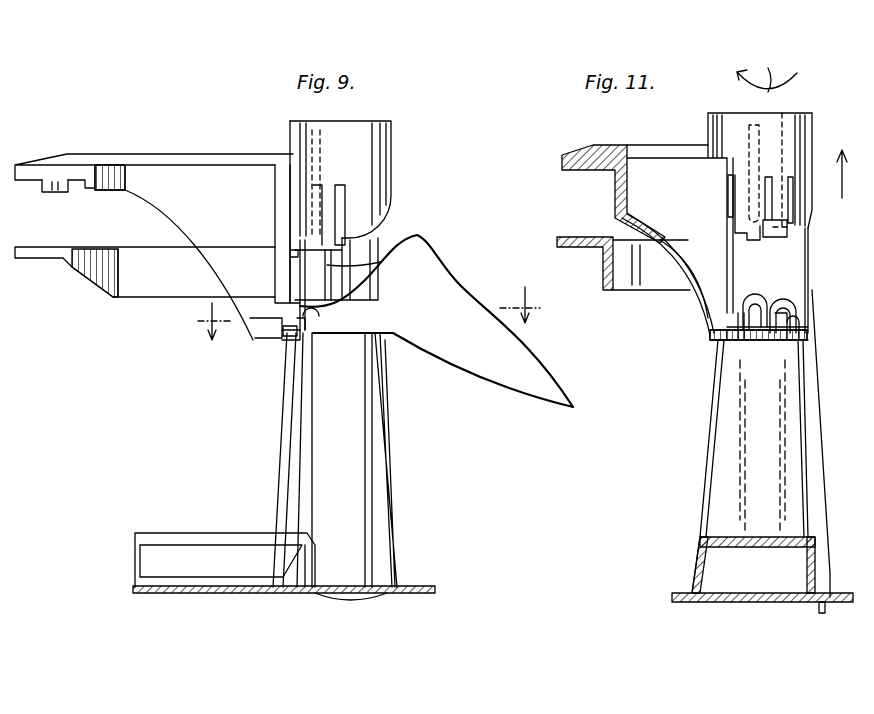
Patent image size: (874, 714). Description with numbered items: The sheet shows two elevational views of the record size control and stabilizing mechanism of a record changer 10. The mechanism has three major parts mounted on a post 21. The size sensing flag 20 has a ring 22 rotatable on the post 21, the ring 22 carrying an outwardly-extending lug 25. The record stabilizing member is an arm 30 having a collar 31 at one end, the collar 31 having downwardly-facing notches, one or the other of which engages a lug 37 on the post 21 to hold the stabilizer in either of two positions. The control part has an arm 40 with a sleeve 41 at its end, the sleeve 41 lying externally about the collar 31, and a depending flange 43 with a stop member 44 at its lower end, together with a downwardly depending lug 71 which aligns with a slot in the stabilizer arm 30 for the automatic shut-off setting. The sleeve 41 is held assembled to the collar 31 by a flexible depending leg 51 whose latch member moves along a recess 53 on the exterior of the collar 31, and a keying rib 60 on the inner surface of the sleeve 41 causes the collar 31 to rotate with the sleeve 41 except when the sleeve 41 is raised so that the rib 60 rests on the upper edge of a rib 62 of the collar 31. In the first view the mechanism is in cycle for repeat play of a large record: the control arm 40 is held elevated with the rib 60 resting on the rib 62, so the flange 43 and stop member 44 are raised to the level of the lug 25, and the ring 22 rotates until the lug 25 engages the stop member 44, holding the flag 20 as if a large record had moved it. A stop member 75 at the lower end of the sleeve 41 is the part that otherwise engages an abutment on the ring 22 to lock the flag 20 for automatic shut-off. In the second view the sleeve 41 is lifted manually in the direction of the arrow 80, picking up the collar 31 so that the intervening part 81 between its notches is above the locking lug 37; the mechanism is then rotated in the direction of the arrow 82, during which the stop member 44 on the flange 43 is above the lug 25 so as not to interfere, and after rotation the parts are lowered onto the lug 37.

In FIG. 9, the record changer 10 is at (195, 592).
In FIG. 11, the record changer 10 is at (730, 602).
In FIG. 9, the size sensing flag 20 is at (447, 348).
In FIG. 11, the size sensing flag 20 is at (718, 460).
In FIG. 9, the post 21 is at (398, 515).
In FIG. 11, the ring 22 is at (750, 338).
In FIG. 9, the lug 25 is at (278, 320).
In FIG. 11, the lug 25 is at (722, 345).
In FIG. 9, the arm 30 is at (132, 288).
In FIG. 11, the arm 30 is at (587, 240).
In FIG. 9, the collar 31 is at (365, 240).
In FIG. 11, the collar 31 is at (800, 242).
In FIG. 9, the lug 37 is at (311, 314).
In FIG. 11, the lug 37 is at (807, 333).
In FIG. 9, the arm 40 is at (195, 148).
In FIG. 11, the arm 40 is at (650, 147).
In FIG. 9, the sleeve 41 is at (383, 137).
In FIG. 11, the sleeve 41 is at (798, 120).
In FIG. 9, the flange 43 is at (250, 318).
In FIG. 11, the flange 43 is at (697, 273).
In FIG. 9, the stop member 44 is at (280, 340).
In FIG. 11, the stop member 44 is at (707, 320).
In FIG. 9, the leg 51 is at (330, 200).
In FIG. 11, the leg 51 is at (780, 205).
In FIG. 9, the recess 53 is at (380, 265).
In FIG. 9, the keying rib 60 is at (300, 186).
In FIG. 11, the keying rib 60 is at (760, 172).
In FIG. 9, the rib 62 is at (320, 283).
In FIG. 9, the lug 71 is at (60, 192).
In FIG. 9, the stop member 75 is at (287, 258).
In FIG. 11, the stop member 75 is at (755, 240).
In FIG. 11, the arrow 80 is at (838, 158).
In FIG. 11, the intervening part 81 is at (767, 338).
In FIG. 11, the arrow 82 is at (767, 68).